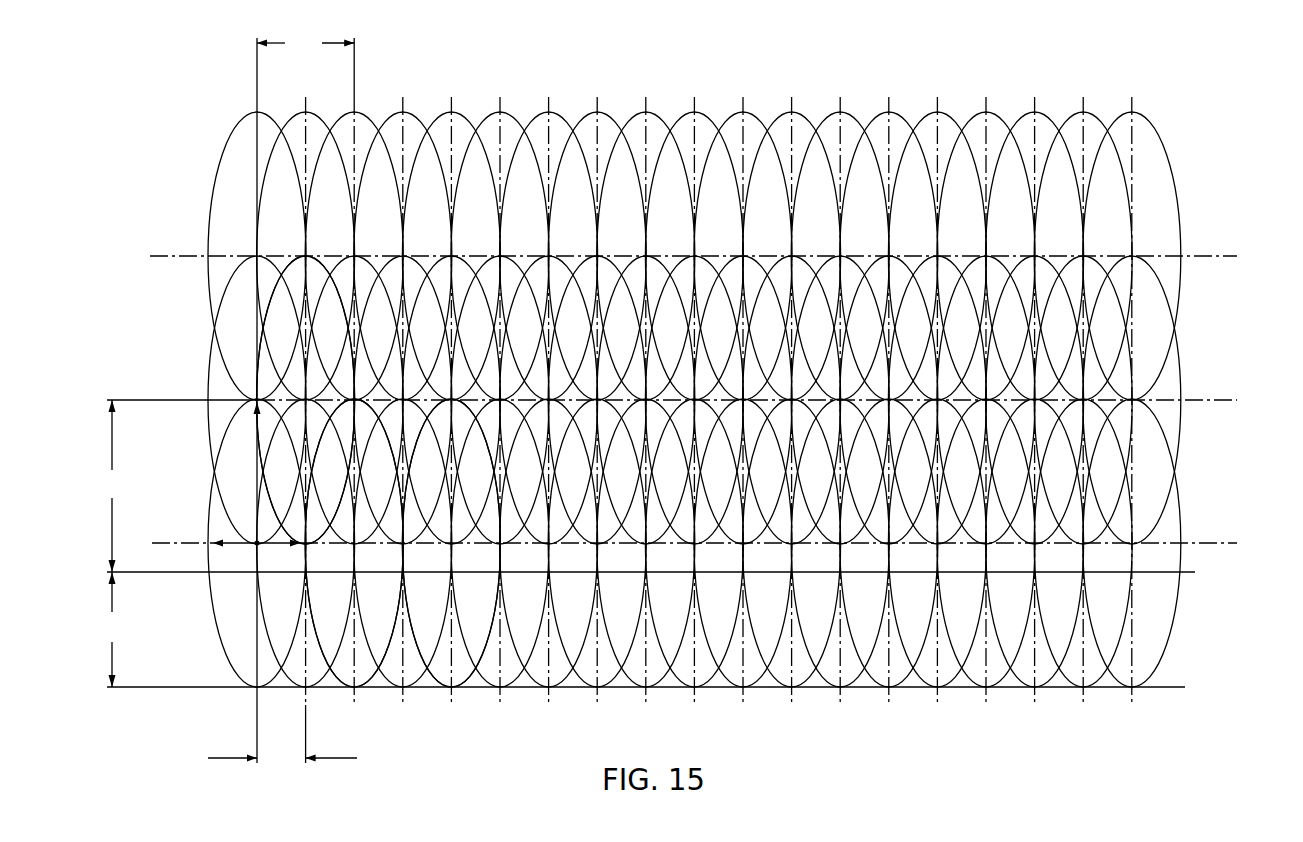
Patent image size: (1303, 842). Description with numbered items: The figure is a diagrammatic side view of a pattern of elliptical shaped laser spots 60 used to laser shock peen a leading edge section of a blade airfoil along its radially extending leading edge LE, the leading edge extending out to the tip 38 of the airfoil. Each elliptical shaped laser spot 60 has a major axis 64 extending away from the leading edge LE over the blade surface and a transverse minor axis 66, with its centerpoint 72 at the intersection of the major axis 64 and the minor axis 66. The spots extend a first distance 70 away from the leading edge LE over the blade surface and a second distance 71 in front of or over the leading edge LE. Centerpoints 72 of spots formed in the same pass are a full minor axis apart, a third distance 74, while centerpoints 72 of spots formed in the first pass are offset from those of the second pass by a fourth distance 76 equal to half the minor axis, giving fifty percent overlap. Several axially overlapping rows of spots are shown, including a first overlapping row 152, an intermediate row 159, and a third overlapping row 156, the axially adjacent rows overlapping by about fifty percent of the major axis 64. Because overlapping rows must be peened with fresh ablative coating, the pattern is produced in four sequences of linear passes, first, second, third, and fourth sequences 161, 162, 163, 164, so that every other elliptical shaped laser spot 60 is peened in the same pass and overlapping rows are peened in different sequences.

The tip of the airfoil 38 is at (257, 80).
The elliptical shaped laser spots 60 is at (312, 118).
The major axis 64 is at (255, 628).
The minor axis 66 is at (232, 547).
The first distance 70 is at (178, 486).
The second distance 71 is at (642, 629).
The centerpoints 72 is at (253, 540).
The third distance 74 is at (305, 44).
The fourth distance 76 is at (282, 737).
The first overlapping row 152 is at (1196, 515).
The third overlapping row 156 is at (1196, 213).
The second row of nozzles 159 is at (1196, 347).
The first sequence 161 is at (233, 130).
The second sequence 162 is at (321, 687).
The third sequence 163 is at (335, 263).
The fourth sequence 164 is at (287, 260).
The leading edge LE is at (1190, 575).